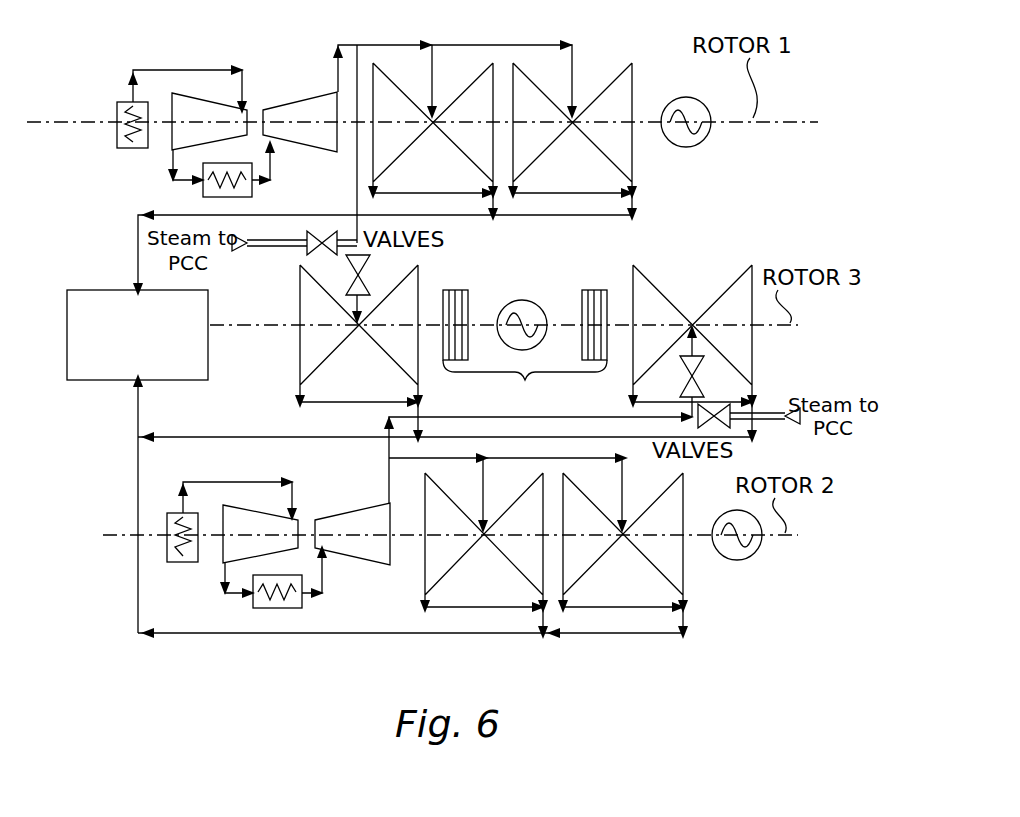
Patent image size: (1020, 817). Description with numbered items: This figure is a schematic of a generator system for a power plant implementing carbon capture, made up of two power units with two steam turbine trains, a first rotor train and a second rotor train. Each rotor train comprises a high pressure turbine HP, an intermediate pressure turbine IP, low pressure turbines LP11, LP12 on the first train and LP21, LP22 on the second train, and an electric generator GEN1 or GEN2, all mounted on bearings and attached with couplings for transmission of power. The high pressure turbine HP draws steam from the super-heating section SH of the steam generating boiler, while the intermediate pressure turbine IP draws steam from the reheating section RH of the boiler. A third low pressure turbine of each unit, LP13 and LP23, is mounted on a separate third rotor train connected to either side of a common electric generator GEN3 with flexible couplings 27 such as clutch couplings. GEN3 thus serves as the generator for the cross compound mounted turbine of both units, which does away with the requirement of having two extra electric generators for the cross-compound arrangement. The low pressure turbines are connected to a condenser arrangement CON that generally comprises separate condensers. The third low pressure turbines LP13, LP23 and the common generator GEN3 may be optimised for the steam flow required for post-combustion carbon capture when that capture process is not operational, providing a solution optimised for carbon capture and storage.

The flexible couplings 27 is at (525, 349).
The super-heating section SH is at (117, 142).
The high pressure turbine HP is at (238, 106).
The intermediate pressure turbine IP is at (302, 99).
The reheating section RH is at (203, 185).
The condenser arrangement CON is at (137, 335).
The low pressure turbine LP11 is at (433, 142).
The low pressure turbine LP12 is at (572, 142).
The third low pressure turbine LP13 is at (359, 354).
The low pressure turbine LP21 is at (484, 556).
The low pressure turbine LP22 is at (623, 556).
The third low pressure turbine LP23 is at (692, 354).
The electric generator GEN1 is at (683, 147).
The electric generator GEN2 is at (735, 560).
The common electric generator GEN3 is at (527, 300).